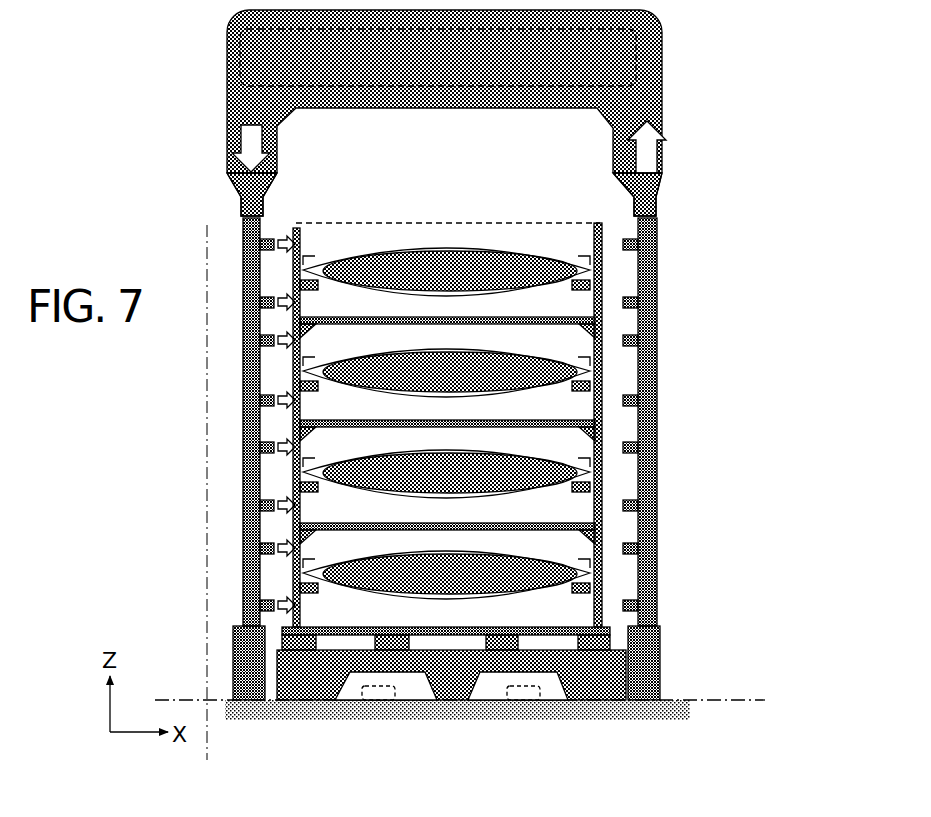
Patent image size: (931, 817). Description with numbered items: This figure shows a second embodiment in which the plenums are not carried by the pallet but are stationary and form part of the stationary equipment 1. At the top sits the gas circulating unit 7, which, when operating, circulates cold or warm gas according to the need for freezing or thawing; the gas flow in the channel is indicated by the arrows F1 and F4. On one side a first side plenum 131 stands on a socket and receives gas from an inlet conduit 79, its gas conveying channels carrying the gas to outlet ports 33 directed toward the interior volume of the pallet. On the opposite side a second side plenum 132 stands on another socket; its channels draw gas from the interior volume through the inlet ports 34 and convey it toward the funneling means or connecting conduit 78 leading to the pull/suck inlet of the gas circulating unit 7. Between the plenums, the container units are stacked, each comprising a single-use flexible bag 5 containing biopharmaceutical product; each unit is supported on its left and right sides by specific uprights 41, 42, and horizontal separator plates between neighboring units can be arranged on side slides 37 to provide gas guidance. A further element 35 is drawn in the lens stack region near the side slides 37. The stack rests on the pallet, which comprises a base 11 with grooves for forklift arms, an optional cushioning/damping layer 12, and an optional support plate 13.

The stationary equipment 1 is at (672, 62).
The single-use flexible bag 5 is at (445, 423).
The gas circulating unit 7 is at (636, 42).
The base 11 is at (628, 686).
The cushioning/damping layer 12 is at (616, 637).
The support plate 13 is at (617, 622).
The outlet ports 33 is at (283, 236).
The inlet ports 34 is at (621, 247).
The spacer block 35 is at (600, 583).
The side slides 37 is at (598, 526).
The upright 41 is at (293, 478).
The upright 42 is at (606, 480).
The funneling means 78 is at (647, 197).
The inlet conduit 79 is at (243, 190).
The first side plenum 131 is at (245, 422).
The second side plenum 132 is at (660, 372).
The flow arrow F1 is at (650, 152).
The flow arrow F4 is at (249, 138).